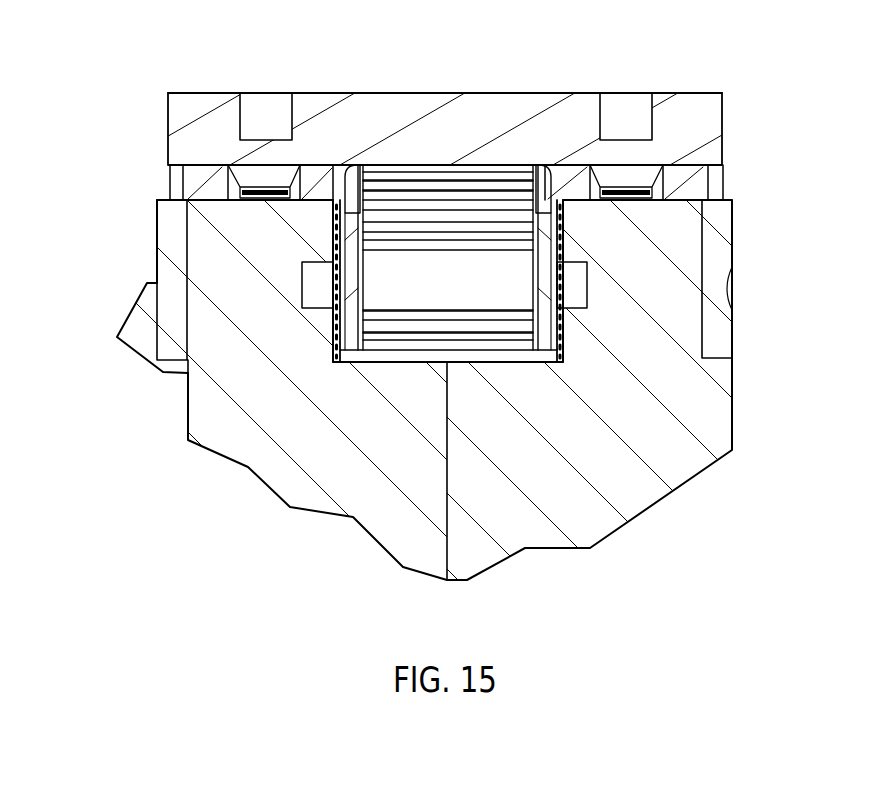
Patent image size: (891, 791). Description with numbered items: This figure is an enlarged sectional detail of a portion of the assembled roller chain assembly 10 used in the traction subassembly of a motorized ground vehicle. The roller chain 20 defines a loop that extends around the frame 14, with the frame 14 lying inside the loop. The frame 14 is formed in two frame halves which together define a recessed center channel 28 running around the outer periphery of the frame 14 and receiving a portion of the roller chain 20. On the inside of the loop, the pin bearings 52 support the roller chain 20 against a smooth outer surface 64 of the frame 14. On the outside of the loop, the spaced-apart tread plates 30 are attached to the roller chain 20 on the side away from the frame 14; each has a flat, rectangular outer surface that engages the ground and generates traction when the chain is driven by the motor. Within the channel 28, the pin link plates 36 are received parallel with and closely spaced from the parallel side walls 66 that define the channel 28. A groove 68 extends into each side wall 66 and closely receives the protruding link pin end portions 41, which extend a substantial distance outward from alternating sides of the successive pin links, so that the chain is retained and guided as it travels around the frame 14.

The roller chain assembly 10 is at (822, 248).
The frame 14 is at (733, 420).
The roller chain 20 is at (168, 138).
The recessed center channel 28 is at (475, 357).
The tread plates 30 is at (488, 93).
The pin link plates 36 is at (358, 366).
The link pin end portion 41 is at (585, 343).
The pin bearings 52 is at (212, 200).
The smooth outer surface 64 is at (224, 193).
The side walls 66 is at (340, 365).
The groove 68 is at (320, 300).